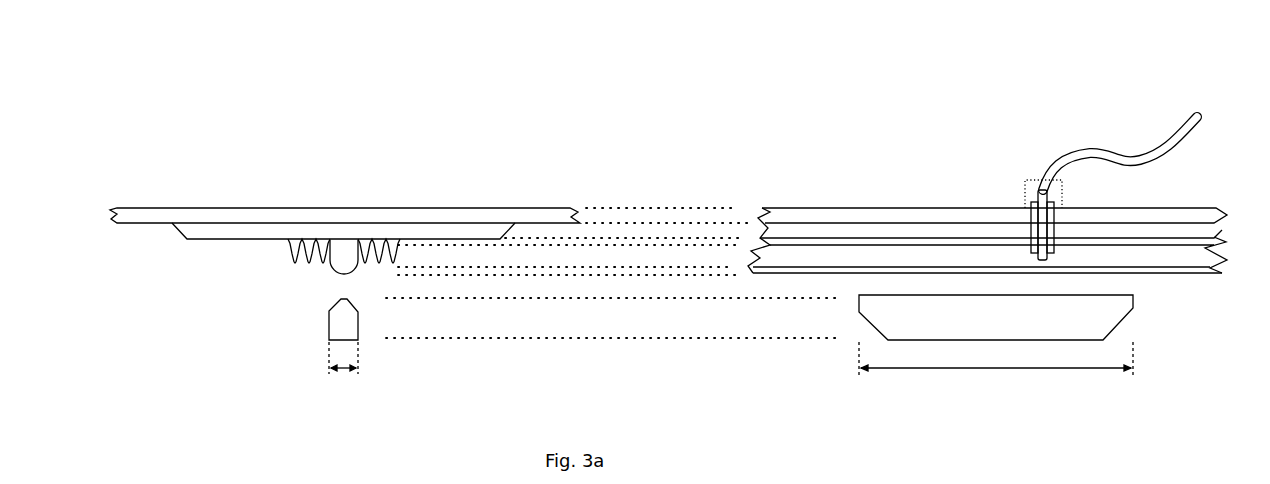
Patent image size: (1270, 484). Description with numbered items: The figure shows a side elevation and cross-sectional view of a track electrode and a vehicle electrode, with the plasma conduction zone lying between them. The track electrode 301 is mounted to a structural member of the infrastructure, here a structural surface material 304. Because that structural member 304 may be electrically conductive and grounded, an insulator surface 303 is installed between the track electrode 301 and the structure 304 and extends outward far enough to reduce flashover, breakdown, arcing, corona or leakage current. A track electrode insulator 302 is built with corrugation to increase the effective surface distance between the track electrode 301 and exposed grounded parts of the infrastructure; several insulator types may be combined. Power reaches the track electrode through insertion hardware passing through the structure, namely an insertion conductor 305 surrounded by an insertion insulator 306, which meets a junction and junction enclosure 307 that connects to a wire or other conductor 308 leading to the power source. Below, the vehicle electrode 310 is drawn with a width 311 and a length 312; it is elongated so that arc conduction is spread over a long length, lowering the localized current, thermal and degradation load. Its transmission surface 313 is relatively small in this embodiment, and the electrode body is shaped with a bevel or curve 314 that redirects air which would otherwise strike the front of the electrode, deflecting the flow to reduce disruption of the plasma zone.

The track electrode 301 is at (355, 255).
The track electrode insulator 302 is at (330, 243).
The insulator surface 303 is at (280, 232).
The structural surface material 304 is at (268, 220).
The insertion conductor 305 is at (1032, 240).
The insertion insulator 306 is at (1023, 200).
The junction enclosure 307 is at (1035, 187).
The wire or other conductor 308 is at (1125, 157).
The vehicle electrode 310 is at (1117, 322).
The width 311 is at (344, 372).
The length 312 is at (996, 369).
The transmission surface 313 is at (343, 299).
The bevel or curve 314 is at (903, 317).